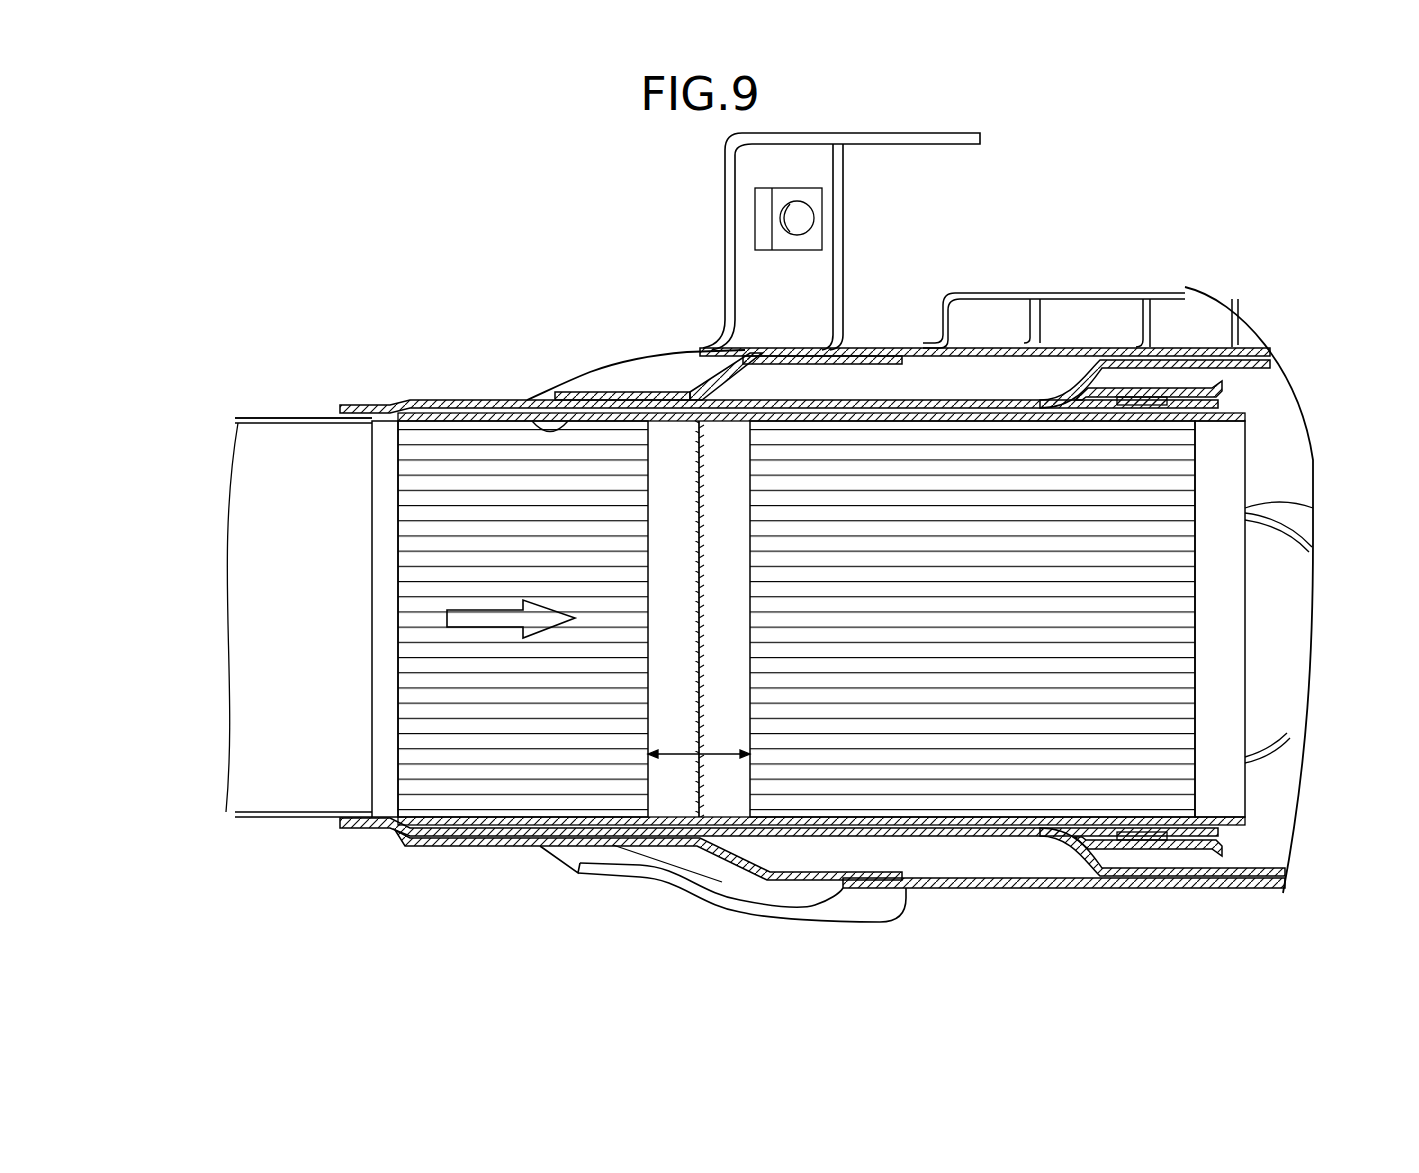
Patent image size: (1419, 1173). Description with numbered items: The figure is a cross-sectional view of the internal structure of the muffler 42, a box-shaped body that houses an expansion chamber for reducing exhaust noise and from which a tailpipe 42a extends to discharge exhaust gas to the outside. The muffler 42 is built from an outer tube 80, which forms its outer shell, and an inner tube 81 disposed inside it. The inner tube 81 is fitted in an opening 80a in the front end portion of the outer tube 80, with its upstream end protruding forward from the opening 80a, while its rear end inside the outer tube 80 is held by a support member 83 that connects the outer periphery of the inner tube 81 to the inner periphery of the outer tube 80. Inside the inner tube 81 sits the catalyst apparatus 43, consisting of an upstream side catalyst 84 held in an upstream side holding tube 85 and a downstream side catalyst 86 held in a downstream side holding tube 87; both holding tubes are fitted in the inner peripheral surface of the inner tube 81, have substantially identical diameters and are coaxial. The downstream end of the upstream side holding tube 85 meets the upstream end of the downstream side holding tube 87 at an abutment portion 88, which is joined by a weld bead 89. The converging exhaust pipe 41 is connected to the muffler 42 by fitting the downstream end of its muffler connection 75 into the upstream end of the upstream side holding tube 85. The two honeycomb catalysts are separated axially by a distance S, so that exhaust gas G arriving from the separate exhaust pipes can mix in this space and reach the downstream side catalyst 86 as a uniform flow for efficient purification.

The converging exhaust pipe 41 is at (245, 416).
The muffler connection 75 is at (282, 412).
The catalyst apparatus 43 is at (397, 497).
The exhaust gas G is at (480, 608).
The opening 80a is at (548, 428).
The muffler 42 is at (615, 361).
The tailpipe 42a is at (1295, 507).
The outer tube 80 is at (915, 347).
The inner tube 81 is at (980, 395).
The support member 83 is at (1050, 392).
The upstream side catalyst 84 is at (487, 790).
The upstream side holding tube 85 is at (390, 830).
The downstream side catalyst 86 is at (937, 795).
The downstream side holding tube 87 is at (953, 824).
The distance S is at (680, 757).
The abutment portion 88 is at (698, 800).
The weld bead 89 is at (704, 773).